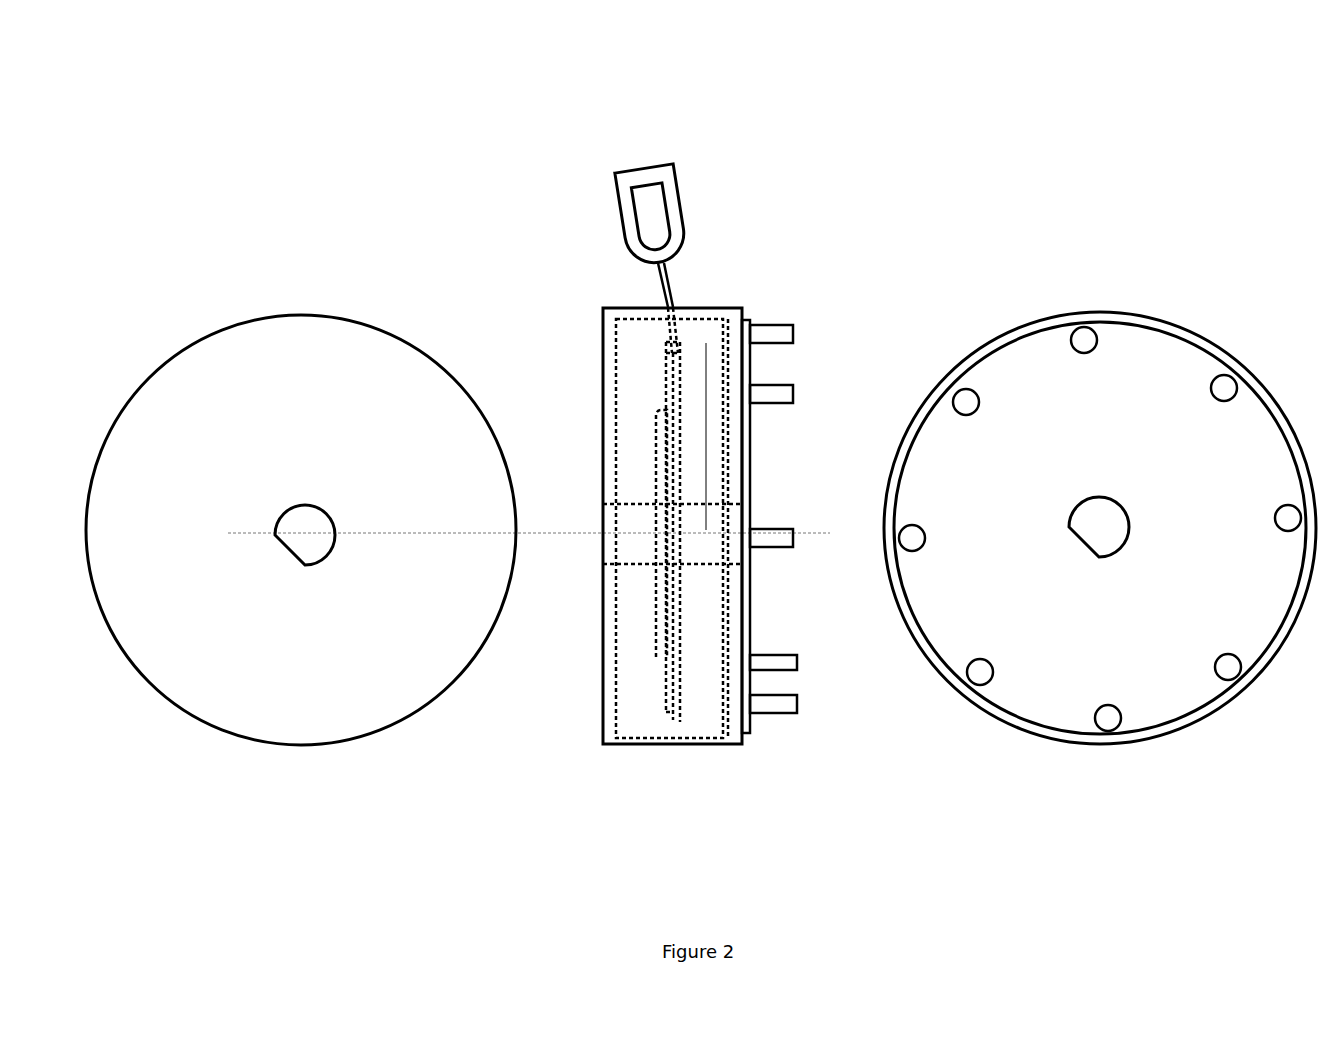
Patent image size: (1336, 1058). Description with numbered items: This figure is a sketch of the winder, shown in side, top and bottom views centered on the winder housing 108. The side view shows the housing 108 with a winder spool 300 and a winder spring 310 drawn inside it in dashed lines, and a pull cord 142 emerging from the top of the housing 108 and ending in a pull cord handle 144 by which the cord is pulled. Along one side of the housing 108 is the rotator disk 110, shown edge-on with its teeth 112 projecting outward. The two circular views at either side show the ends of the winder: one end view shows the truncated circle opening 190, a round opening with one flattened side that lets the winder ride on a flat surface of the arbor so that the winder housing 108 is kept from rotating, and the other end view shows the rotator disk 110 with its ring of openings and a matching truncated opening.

The winder housing 108 is at (710, 307).
The rotator disk 110 is at (750, 723).
The teeth 112 is at (787, 323).
The pull cord 142 is at (672, 298).
The pull cord handle 144 is at (641, 162).
The truncated circle opening 190 is at (318, 505).
The winder spool 300 is at (668, 718).
The winder spring 310 is at (657, 443).